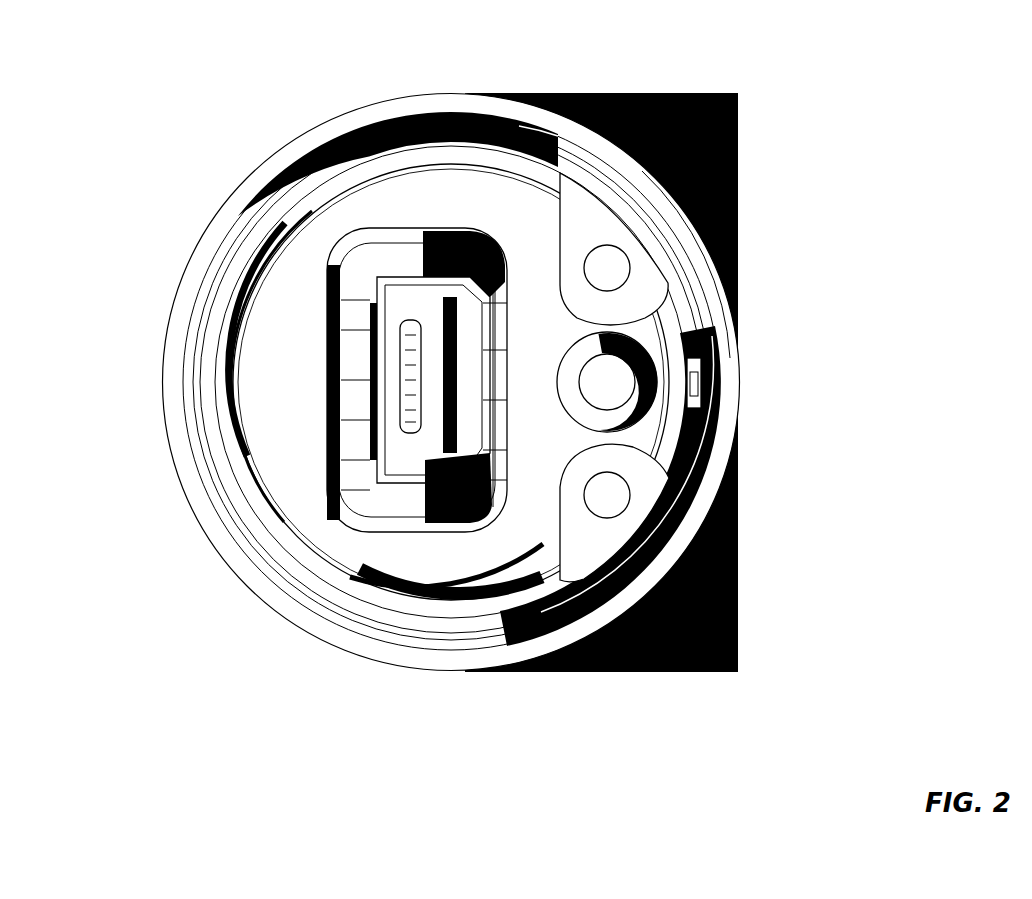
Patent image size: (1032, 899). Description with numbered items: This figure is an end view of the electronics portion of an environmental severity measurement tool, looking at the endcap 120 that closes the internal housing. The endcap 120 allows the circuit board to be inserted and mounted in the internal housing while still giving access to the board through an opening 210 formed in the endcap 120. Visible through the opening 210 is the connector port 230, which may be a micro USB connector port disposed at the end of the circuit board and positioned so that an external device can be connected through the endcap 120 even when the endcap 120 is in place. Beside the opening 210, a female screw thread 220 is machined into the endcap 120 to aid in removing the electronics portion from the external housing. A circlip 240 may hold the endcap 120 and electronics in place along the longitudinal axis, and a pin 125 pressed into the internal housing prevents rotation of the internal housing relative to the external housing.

The endcap 120 is at (443, 113).
The pin 125 is at (708, 383).
The opening 210 is at (363, 233).
The female screw thread 220 is at (596, 382).
The connector port 230 is at (413, 385).
The circlip 240 is at (648, 470).